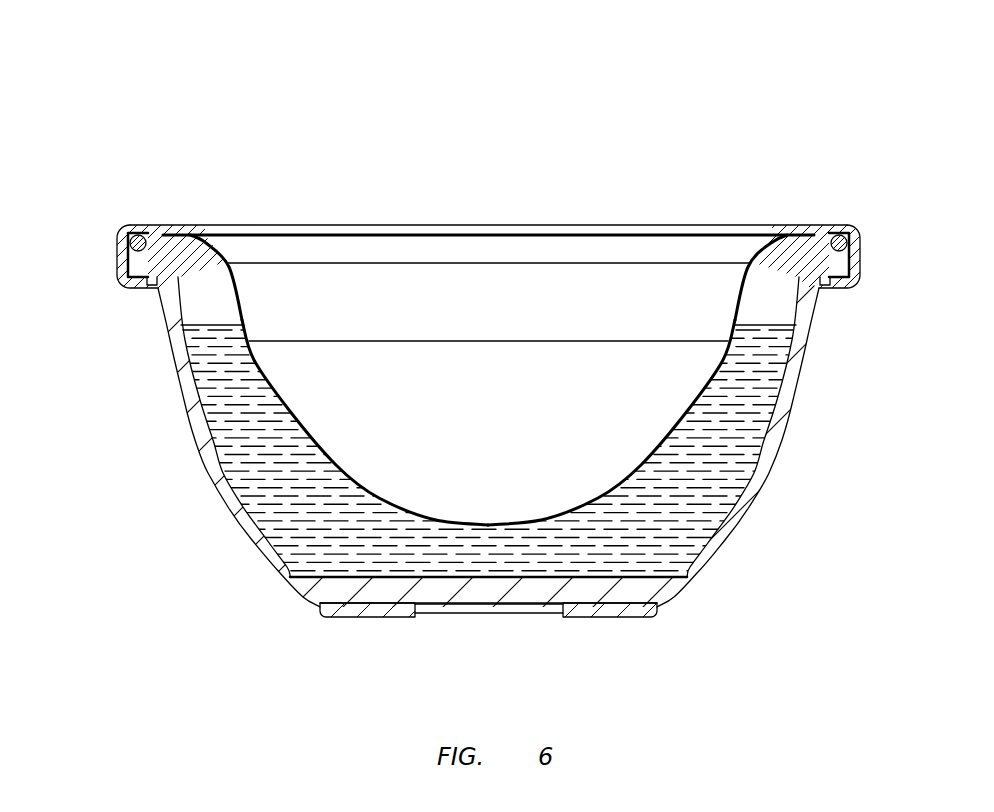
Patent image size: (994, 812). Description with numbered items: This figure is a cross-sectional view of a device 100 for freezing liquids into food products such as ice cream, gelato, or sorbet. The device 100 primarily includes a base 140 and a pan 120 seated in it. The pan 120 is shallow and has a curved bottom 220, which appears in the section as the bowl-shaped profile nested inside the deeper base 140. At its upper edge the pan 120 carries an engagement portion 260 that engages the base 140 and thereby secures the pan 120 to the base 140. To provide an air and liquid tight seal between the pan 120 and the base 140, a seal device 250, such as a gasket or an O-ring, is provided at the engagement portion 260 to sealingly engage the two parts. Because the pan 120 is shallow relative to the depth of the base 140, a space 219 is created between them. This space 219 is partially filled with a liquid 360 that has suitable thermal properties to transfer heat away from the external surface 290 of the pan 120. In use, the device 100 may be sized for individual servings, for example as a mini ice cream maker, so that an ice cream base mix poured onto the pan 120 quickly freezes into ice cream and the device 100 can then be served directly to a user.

The device 100 is at (203, 67).
The pan 120 is at (752, 247).
The base 140 is at (777, 457).
The space 219 is at (765, 413).
The curved bottom 220 is at (340, 468).
The seal device 250 is at (118, 270).
The engagement portion 260 is at (125, 228).
The external surface 290 is at (590, 498).
The liquid 360 is at (727, 505).